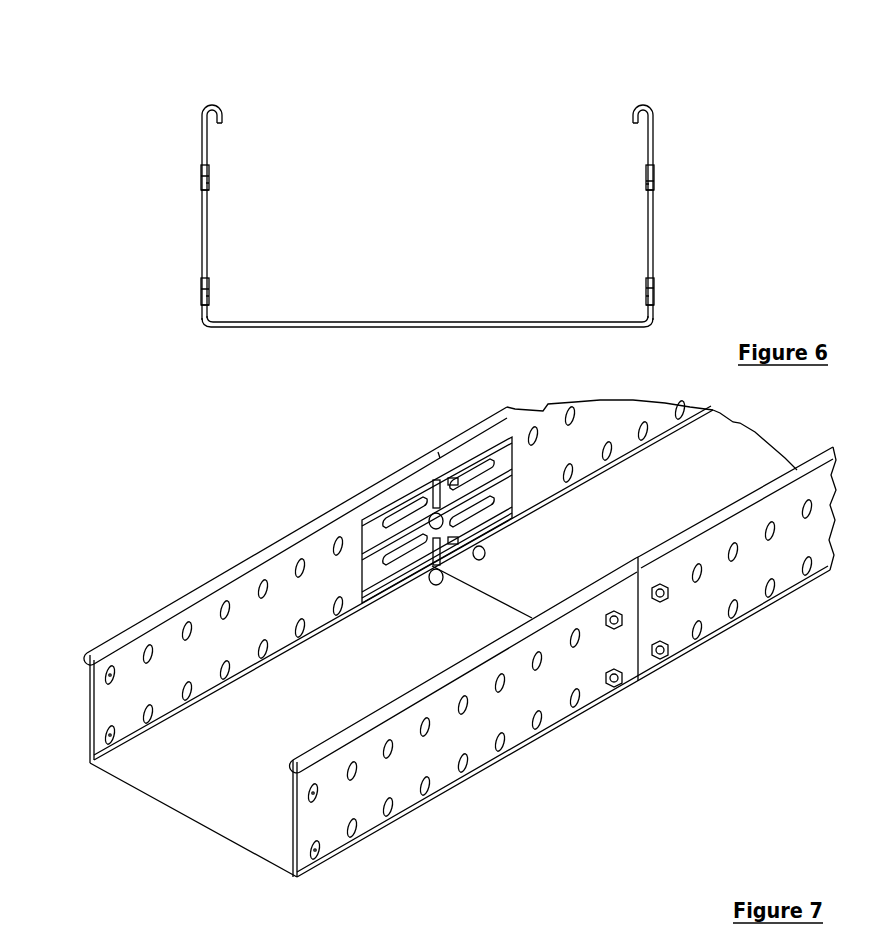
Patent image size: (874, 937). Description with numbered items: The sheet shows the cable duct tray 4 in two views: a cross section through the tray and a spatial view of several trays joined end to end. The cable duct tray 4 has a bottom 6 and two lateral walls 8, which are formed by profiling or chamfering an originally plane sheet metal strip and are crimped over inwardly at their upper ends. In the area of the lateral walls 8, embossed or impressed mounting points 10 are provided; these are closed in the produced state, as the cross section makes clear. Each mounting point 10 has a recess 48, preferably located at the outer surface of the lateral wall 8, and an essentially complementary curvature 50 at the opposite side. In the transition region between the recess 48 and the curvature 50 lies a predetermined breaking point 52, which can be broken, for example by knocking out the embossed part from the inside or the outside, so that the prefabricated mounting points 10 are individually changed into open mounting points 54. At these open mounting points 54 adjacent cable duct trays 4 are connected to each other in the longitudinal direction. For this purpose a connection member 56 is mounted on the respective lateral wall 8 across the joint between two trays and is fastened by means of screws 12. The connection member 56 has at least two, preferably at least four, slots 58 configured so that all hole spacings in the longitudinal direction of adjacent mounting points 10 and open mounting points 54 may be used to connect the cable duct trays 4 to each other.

In FIG. 6, the cable duct tray 4 is at (450, 115).
In FIG. 7, the cable duct tray 4 is at (168, 572).
In FIG. 6, the bottom 6 is at (380, 328).
In FIG. 7, the bottom 6 is at (193, 790).
In FIG. 6, the lateral walls 8 is at (201, 147).
In FIG. 7, the lateral walls 8 is at (272, 546).
In FIG. 6, the mounting points 10 is at (203, 176).
In FIG. 7, the mounting points 10 is at (680, 406).
In FIG. 7, the screws 12 is at (658, 602).
In FIG. 6, the recess 48 is at (202, 172).
In FIG. 6, the curvature 50 is at (207, 188).
In FIG. 6, the predetermined breaking point 52 is at (203, 197).
In FIG. 7, the open mounting points 54 is at (108, 678).
In FIG. 7, the connection member 56 is at (378, 553).
In FIG. 7, the slots 58 is at (393, 512).